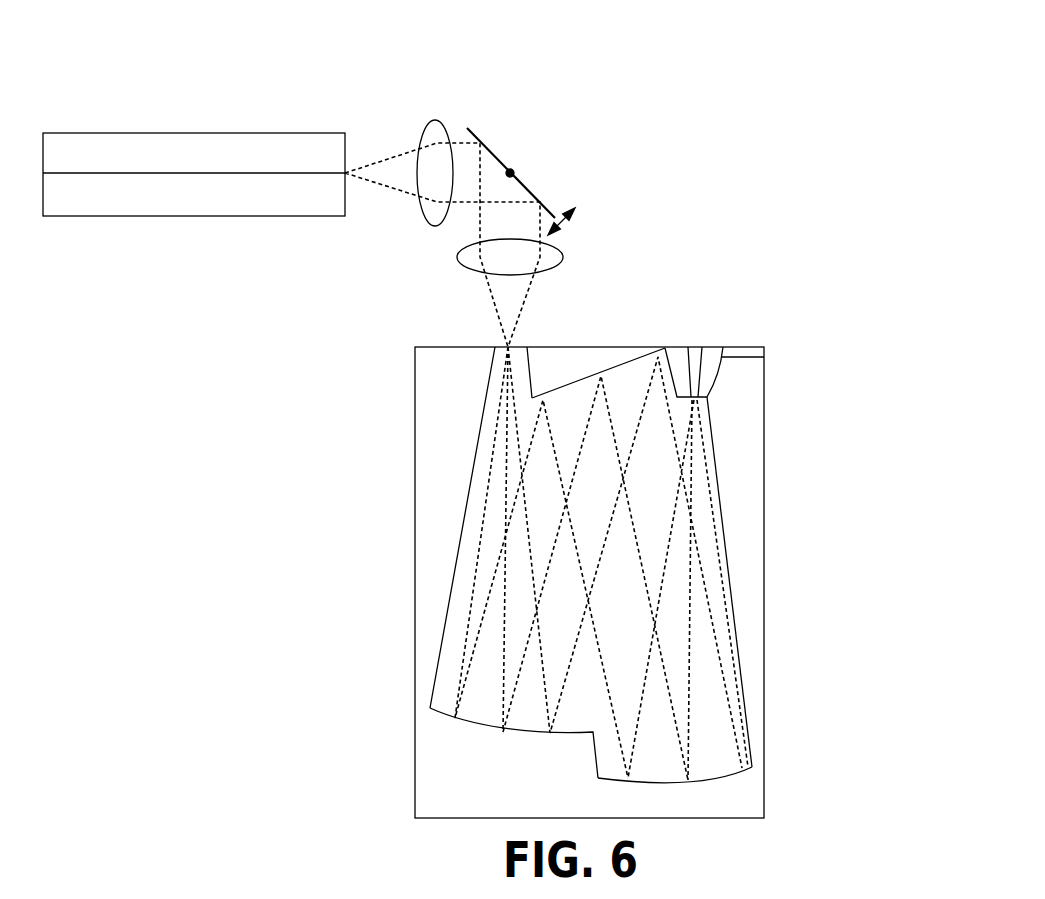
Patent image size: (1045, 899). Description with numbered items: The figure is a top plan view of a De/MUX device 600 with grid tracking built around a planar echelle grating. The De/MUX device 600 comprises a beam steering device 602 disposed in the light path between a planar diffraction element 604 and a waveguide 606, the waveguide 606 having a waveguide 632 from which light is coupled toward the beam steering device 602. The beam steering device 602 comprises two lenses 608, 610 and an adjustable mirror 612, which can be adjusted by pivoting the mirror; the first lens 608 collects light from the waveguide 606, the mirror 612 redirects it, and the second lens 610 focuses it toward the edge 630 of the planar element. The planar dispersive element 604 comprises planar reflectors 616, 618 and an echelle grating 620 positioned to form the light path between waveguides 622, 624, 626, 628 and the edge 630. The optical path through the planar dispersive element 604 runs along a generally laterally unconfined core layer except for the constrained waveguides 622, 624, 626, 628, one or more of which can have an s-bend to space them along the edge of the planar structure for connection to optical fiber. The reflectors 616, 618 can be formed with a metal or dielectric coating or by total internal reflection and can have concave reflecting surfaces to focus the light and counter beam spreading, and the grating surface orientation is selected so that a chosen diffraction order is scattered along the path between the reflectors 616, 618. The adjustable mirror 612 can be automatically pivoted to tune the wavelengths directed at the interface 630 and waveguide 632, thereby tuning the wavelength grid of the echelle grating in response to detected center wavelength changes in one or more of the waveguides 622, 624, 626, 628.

The De/MUX device 600 is at (636, 80).
The beam steering device 602 is at (500, 107).
The planar diffraction element 604 is at (762, 318).
The waveguide 606 is at (173, 160).
The lens 608 is at (421, 137).
The lens 610 is at (556, 268).
The adjustable mirror 612 is at (530, 190).
The planar reflector 616 is at (510, 733).
The planar reflector 618 is at (630, 780).
The echelle grating 620 is at (570, 387).
The waveguide 622 is at (678, 348).
The waveguide 624 is at (700, 348).
The waveguide 626 is at (702, 372).
The waveguide 628 is at (764, 357).
The edge 630 is at (497, 341).
The waveguide 632 is at (100, 175).